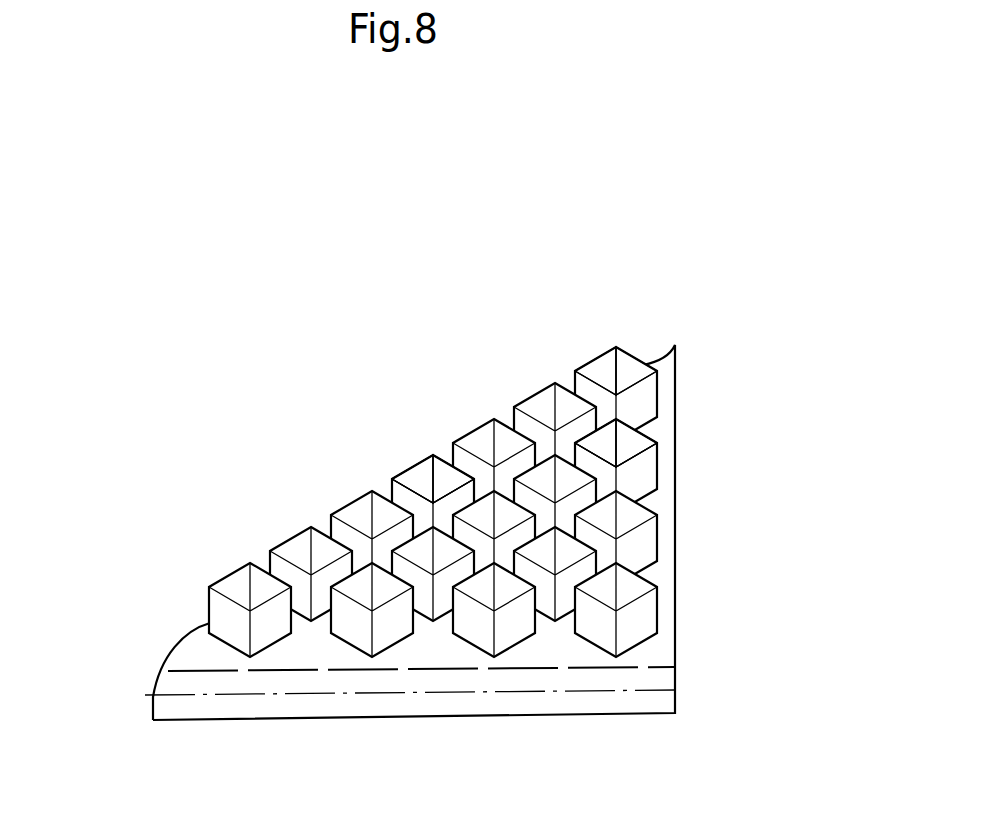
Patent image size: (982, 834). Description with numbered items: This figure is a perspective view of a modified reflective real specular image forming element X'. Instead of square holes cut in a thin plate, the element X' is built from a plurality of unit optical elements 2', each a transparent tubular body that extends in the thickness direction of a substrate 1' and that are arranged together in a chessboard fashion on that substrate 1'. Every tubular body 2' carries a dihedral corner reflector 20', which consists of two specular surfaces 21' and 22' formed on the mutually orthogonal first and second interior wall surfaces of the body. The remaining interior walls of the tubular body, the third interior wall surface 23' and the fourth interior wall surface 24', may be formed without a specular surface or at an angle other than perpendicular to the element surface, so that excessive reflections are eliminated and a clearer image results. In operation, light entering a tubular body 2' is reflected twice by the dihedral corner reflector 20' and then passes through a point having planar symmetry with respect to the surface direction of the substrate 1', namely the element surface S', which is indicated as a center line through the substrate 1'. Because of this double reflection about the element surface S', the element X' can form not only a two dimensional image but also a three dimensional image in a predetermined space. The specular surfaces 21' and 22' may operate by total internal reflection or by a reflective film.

The reflective real specular image forming element X' is at (477, 524).
The substrate 1' is at (468, 532).
The unit optical element 2' is at (454, 571).
The dihedral corner reflector 20' is at (586, 409).
The specular surface 21' is at (585, 437).
The specular surface 22' is at (548, 453).
The third interior wall surface 23' is at (627, 316).
The fourth interior wall surface 24' is at (573, 330).
The element surface S' is at (410, 750).